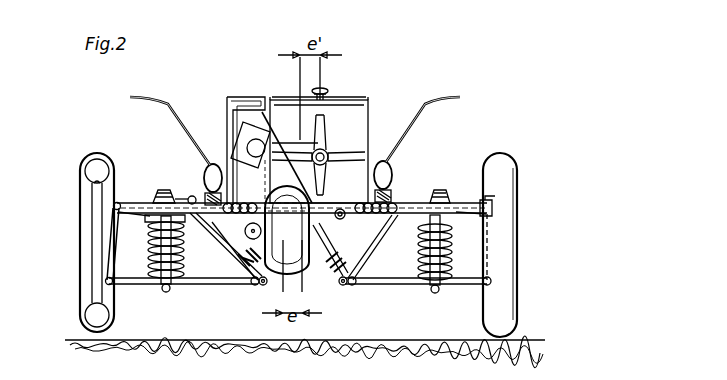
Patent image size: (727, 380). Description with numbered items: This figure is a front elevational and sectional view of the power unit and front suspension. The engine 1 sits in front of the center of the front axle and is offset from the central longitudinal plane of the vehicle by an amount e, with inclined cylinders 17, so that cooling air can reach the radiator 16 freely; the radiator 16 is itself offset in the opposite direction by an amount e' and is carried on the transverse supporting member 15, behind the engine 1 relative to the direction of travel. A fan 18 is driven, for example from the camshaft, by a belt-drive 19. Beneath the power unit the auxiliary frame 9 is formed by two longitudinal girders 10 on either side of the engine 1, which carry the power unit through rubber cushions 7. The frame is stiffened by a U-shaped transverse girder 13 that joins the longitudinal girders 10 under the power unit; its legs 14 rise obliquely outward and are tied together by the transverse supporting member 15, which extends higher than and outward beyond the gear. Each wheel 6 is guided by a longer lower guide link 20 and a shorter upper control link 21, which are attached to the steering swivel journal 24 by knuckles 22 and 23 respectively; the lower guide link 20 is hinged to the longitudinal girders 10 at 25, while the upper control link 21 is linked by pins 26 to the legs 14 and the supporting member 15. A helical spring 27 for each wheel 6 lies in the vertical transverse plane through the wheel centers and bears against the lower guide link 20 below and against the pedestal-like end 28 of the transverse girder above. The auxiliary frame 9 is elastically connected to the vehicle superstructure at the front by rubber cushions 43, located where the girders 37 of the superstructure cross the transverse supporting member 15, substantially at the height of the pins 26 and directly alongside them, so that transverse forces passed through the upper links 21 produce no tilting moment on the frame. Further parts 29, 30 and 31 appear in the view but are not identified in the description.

The engine 1 is at (306, 258).
The wheel 6 is at (80, 163).
The rubber cushion 7 is at (226, 248).
The auxiliary frame 9 is at (310, 284).
The longitudinal girder 10 is at (262, 285).
The transverse girder 13 is at (246, 264).
The ends or legs of transverse girder 14 is at (218, 232).
The transverse supporting member 15 is at (418, 216).
The radiator 16 is at (366, 132).
The inclined cylinders 17 is at (240, 148).
The fan 18 is at (323, 138).
The belt-drive 19 is at (291, 143).
The lower guide link 20 is at (140, 284).
The upper control link 21 is at (140, 203).
The knuckle 22 is at (106, 282).
The knuckle 23 is at (113, 205).
The steering swivel journal 24 is at (110, 248).
The link attachment point 25 is at (252, 284).
The pin 26 is at (191, 197).
The helical spring 27 is at (180, 272).
The pedestal-like end 28 is at (150, 220).
The bracket 29 is at (162, 195).
The pivot 30 is at (341, 208).
The arm 31 is at (112, 217).
The girder of vehicle-superstructure 37 is at (205, 176).
The rubber cushion 43 is at (226, 208).